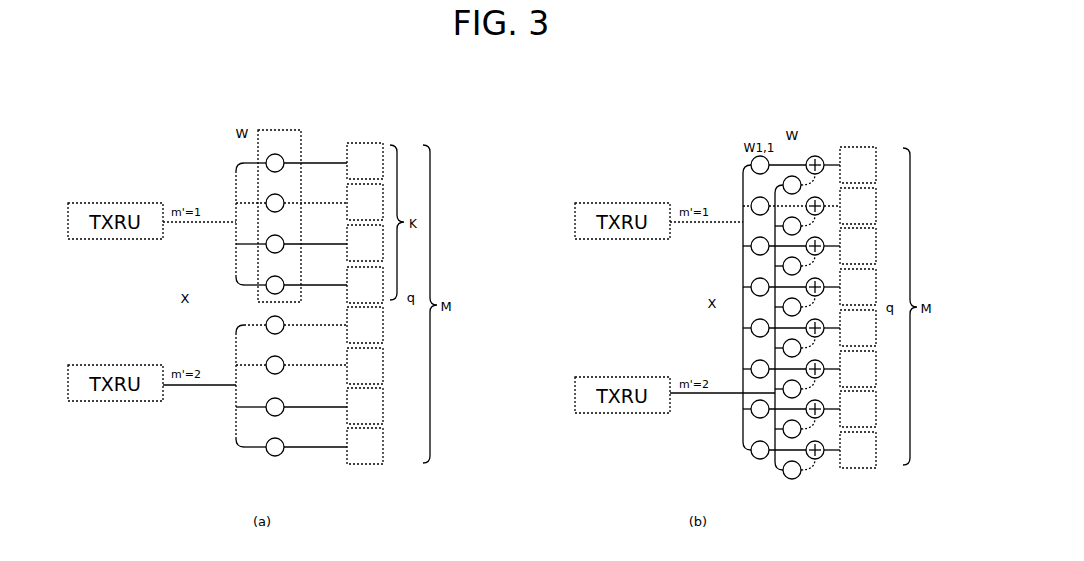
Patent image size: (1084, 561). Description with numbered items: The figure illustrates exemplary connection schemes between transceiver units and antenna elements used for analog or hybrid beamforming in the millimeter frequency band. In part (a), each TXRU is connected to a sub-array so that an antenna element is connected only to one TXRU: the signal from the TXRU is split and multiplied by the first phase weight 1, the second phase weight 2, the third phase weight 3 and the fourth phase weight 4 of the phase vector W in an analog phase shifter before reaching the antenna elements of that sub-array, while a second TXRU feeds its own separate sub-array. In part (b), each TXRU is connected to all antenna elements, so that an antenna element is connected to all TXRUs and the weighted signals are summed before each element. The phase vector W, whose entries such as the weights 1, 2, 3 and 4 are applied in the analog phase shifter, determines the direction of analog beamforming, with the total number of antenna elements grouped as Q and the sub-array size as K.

The weight W1 1 is at (275, 156).
The weight W2 2 is at (275, 196).
The weight W3 3 is at (275, 237).
The weight W4 4 is at (275, 278).